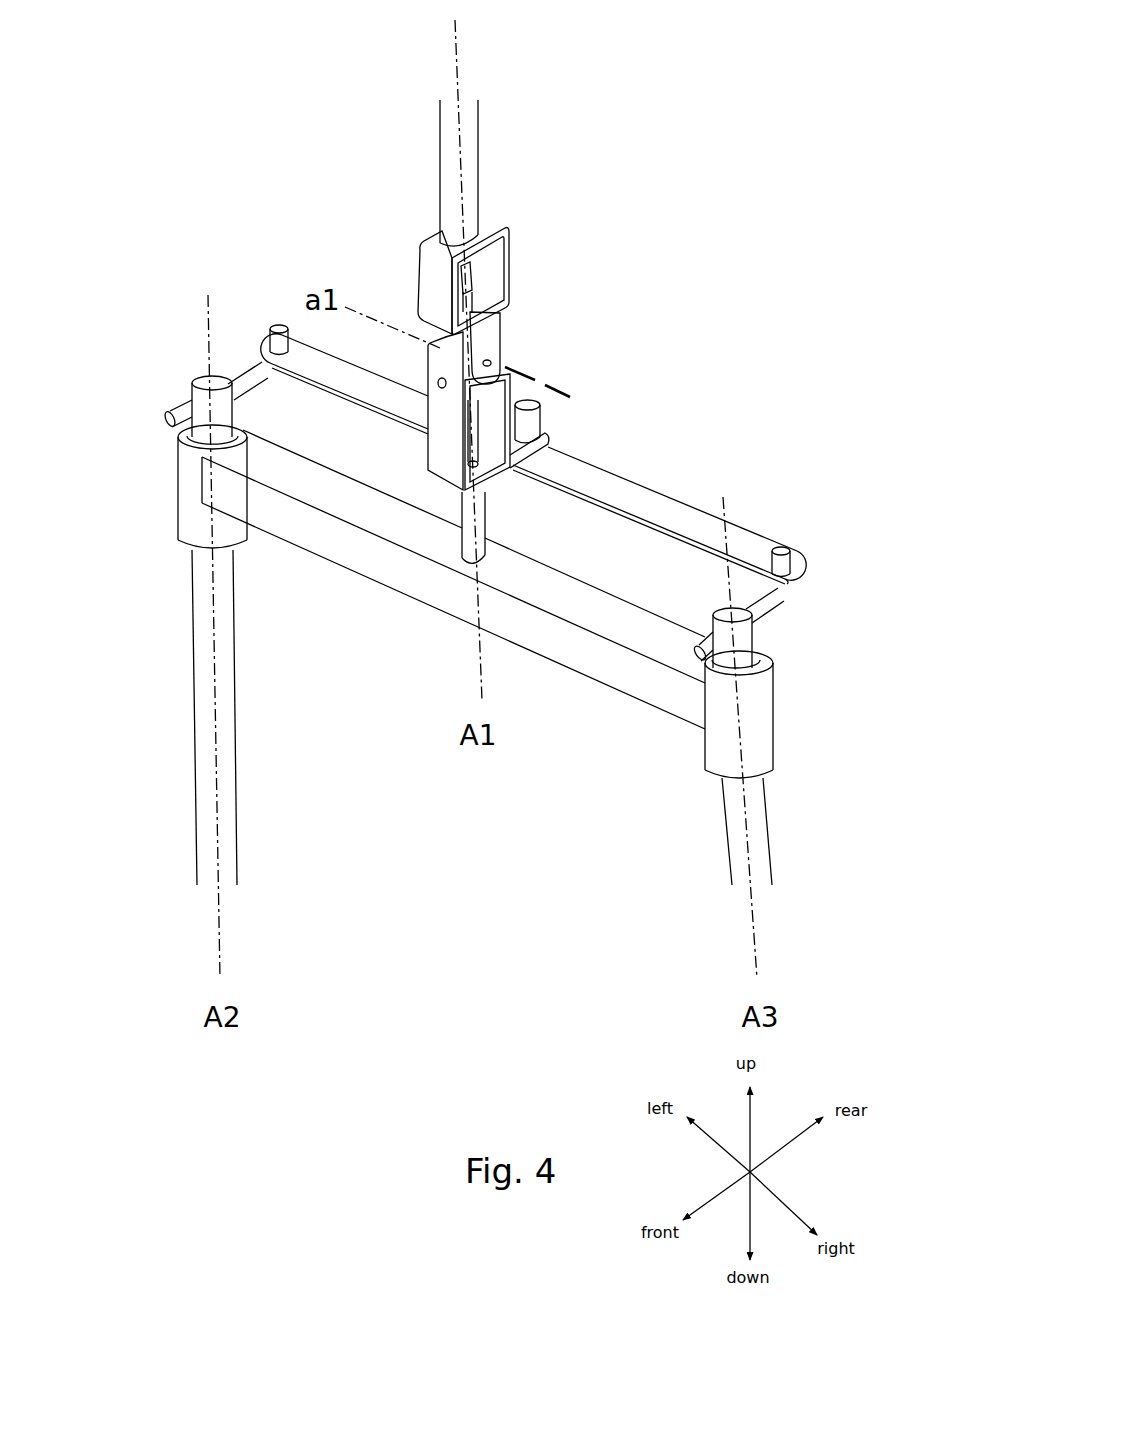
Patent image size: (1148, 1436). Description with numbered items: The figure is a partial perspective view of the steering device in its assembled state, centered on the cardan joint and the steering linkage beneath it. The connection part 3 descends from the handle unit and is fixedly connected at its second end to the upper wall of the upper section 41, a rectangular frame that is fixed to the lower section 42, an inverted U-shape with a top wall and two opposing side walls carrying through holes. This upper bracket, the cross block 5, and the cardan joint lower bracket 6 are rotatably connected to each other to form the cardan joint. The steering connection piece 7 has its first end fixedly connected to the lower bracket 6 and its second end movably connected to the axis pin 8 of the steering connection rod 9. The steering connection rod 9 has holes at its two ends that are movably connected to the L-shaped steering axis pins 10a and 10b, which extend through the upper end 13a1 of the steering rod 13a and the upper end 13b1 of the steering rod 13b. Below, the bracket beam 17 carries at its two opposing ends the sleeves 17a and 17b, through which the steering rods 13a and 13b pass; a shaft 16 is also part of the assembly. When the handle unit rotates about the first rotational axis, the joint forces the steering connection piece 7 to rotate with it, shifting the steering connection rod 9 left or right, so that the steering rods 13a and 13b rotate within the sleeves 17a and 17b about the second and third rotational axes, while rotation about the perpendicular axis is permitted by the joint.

The connection part 3 is at (470, 203).
The upper section 41 is at (494, 281).
The lower section 42 is at (489, 341).
The cross block 5 is at (461, 336).
The cardan joint lower bracket 6 is at (547, 386).
The steering connection piece 7 is at (492, 422).
The axis pin 8 is at (532, 447).
The steering connection rod 9 is at (607, 495).
The steering axis pin 10a is at (243, 380).
The steering axis pin 10b is at (764, 607).
The upper end of steering rod 13a1 is at (190, 386).
The upper end of steering rod 13b1 is at (745, 644).
The steering rod 13a is at (212, 612).
The steering rod 13b is at (770, 800).
The shaft 16 is at (458, 527).
The bracket beam 17 is at (500, 625).
The sleeve 17a is at (190, 512).
The sleeve 17b is at (752, 703).